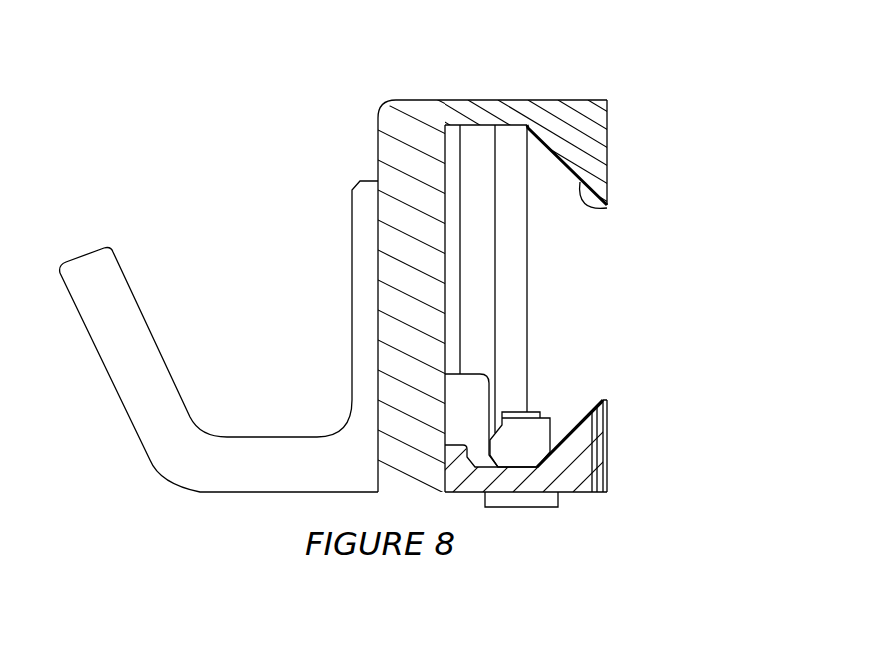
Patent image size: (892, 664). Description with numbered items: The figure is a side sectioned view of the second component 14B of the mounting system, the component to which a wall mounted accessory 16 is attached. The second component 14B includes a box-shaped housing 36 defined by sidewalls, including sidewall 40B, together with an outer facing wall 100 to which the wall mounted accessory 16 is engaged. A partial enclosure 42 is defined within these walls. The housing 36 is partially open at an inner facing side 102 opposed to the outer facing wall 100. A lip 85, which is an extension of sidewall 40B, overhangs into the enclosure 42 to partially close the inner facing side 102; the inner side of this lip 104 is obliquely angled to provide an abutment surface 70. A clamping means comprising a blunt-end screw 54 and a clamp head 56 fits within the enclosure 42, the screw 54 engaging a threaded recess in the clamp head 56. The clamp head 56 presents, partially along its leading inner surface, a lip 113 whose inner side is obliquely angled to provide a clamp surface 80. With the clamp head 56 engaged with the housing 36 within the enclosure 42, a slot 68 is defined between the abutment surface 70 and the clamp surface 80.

The second component 14B is at (350, 106).
The wall mounted accessory 16 is at (152, 477).
The box-shaped housing 36 is at (460, 98).
The sidewall 40B is at (520, 100).
The partial enclosure 42 is at (563, 265).
The blunt-end screw 54 is at (528, 507).
The clamp head 56 is at (572, 473).
The slot 68 is at (548, 301).
The abutment surface 70 is at (607, 210).
The clamp surface 80 is at (572, 422).
The lip 85 is at (588, 128).
The outer facing wall 100 is at (377, 163).
The inner facing side 102 is at (592, 236).
The inner side of lip 104 is at (666, 176).
The lip 113 is at (578, 455).